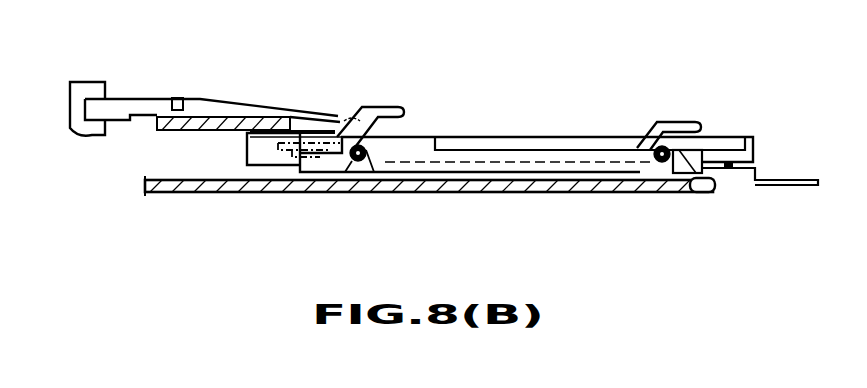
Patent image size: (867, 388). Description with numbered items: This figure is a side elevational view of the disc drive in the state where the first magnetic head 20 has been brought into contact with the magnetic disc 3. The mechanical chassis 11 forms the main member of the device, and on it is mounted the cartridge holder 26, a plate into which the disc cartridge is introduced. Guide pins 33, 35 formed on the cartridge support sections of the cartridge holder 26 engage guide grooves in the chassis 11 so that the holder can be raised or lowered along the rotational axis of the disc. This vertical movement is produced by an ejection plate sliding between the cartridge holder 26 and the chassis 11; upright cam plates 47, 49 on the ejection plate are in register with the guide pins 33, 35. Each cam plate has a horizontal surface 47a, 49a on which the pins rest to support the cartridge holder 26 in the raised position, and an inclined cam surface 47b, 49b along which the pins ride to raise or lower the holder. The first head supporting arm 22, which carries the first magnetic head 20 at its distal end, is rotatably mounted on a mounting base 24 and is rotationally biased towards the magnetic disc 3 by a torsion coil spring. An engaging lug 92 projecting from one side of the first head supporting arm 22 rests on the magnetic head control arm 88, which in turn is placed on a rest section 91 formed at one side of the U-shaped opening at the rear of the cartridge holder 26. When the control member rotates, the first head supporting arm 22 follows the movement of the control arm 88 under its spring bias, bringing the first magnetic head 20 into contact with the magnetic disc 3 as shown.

The mechanical chassis 11 is at (240, 191).
The magnetic disc 3 is at (292, 152).
The first magnetic head 20 is at (330, 140).
The first head supporting arm 22 is at (151, 108).
The mounting base 24 is at (92, 94).
The cartridge holder 26 is at (248, 152).
The guide pin 33 is at (352, 164).
The guide pin 35 is at (660, 164).
The cam plate 47 is at (419, 148).
The horizontal surface 47a is at (420, 137).
The inclined cam surface 47b is at (366, 156).
The cam plate 49 is at (720, 184).
The horizontal surface 49a is at (688, 143).
The inclined cam surface 49b is at (698, 192).
The magnetic head control arm 88 is at (178, 132).
The rest section 91 is at (296, 130).
The engaging lug 92 is at (184, 100).